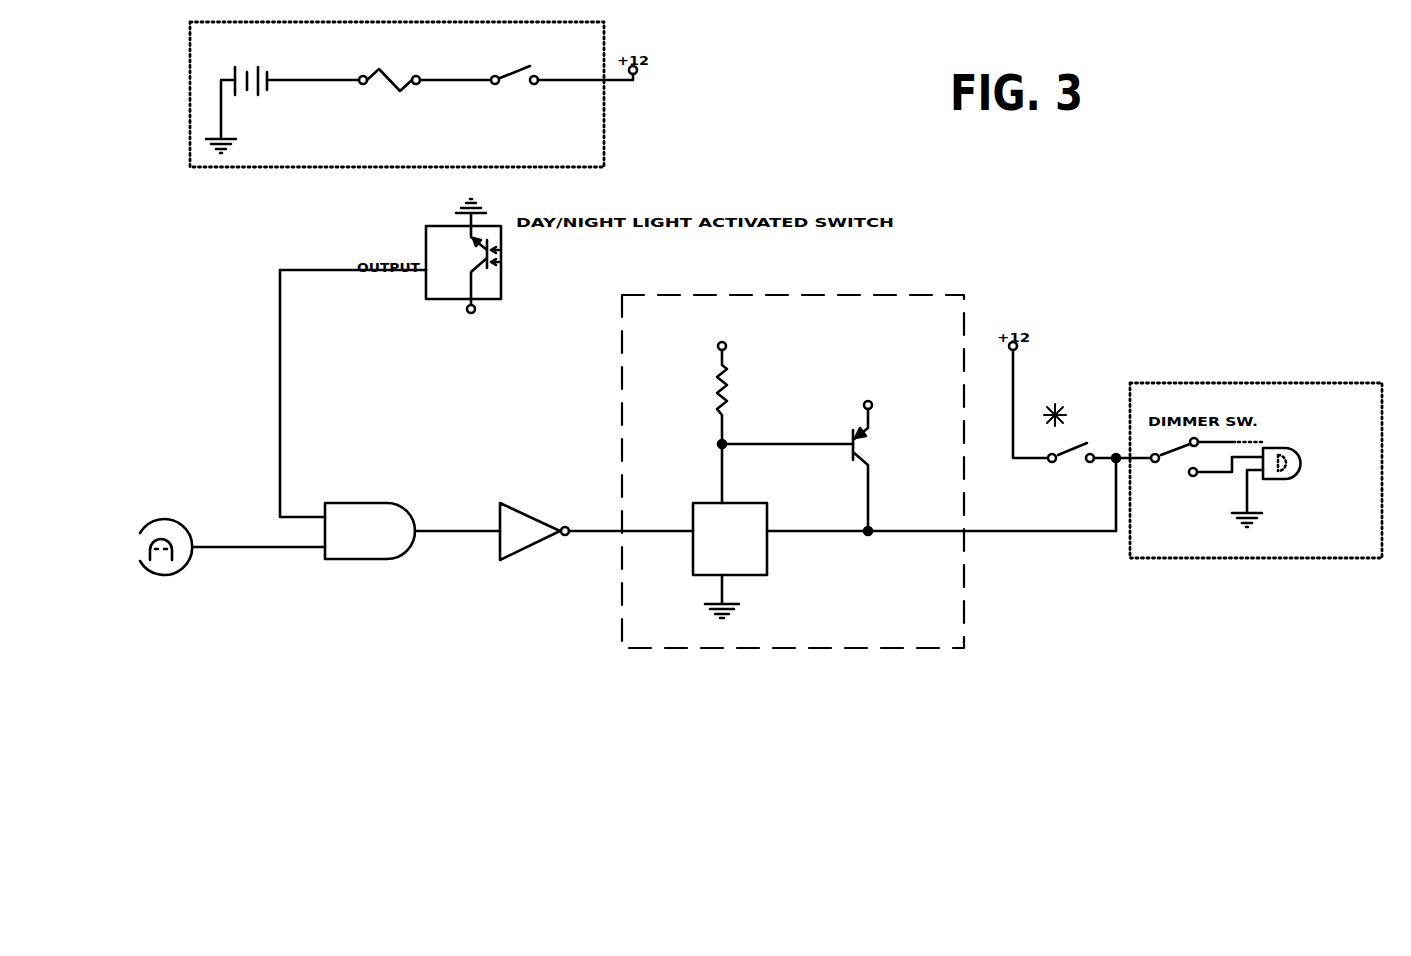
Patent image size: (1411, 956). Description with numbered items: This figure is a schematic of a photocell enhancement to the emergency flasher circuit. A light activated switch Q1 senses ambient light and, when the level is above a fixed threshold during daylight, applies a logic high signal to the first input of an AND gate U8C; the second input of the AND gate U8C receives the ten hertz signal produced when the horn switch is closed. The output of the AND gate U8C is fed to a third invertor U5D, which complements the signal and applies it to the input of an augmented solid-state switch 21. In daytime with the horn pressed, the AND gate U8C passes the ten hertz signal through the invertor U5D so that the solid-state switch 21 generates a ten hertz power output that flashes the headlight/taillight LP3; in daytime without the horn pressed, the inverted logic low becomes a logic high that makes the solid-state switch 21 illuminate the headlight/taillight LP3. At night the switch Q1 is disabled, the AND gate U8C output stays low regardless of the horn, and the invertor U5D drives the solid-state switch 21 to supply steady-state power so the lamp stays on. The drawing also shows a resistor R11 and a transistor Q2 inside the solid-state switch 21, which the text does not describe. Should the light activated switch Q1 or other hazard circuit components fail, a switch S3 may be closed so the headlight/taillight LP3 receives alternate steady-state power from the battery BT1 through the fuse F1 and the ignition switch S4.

The augmented solid-state switch 21 is at (869, 448).
The battery BT1 is at (240, 104).
The fuse F1 is at (389, 81).
The ignition switch S4 is at (527, 61).
The light activated switch Q1 is at (524, 265).
The AND gate U8C is at (375, 533).
The third invertor U5D is at (535, 533).
The resistor R11 is at (738, 387).
The transistor Q2 is at (896, 459).
The switch S3 is at (1069, 433).
The headlight/taillight LP3 is at (1301, 478).